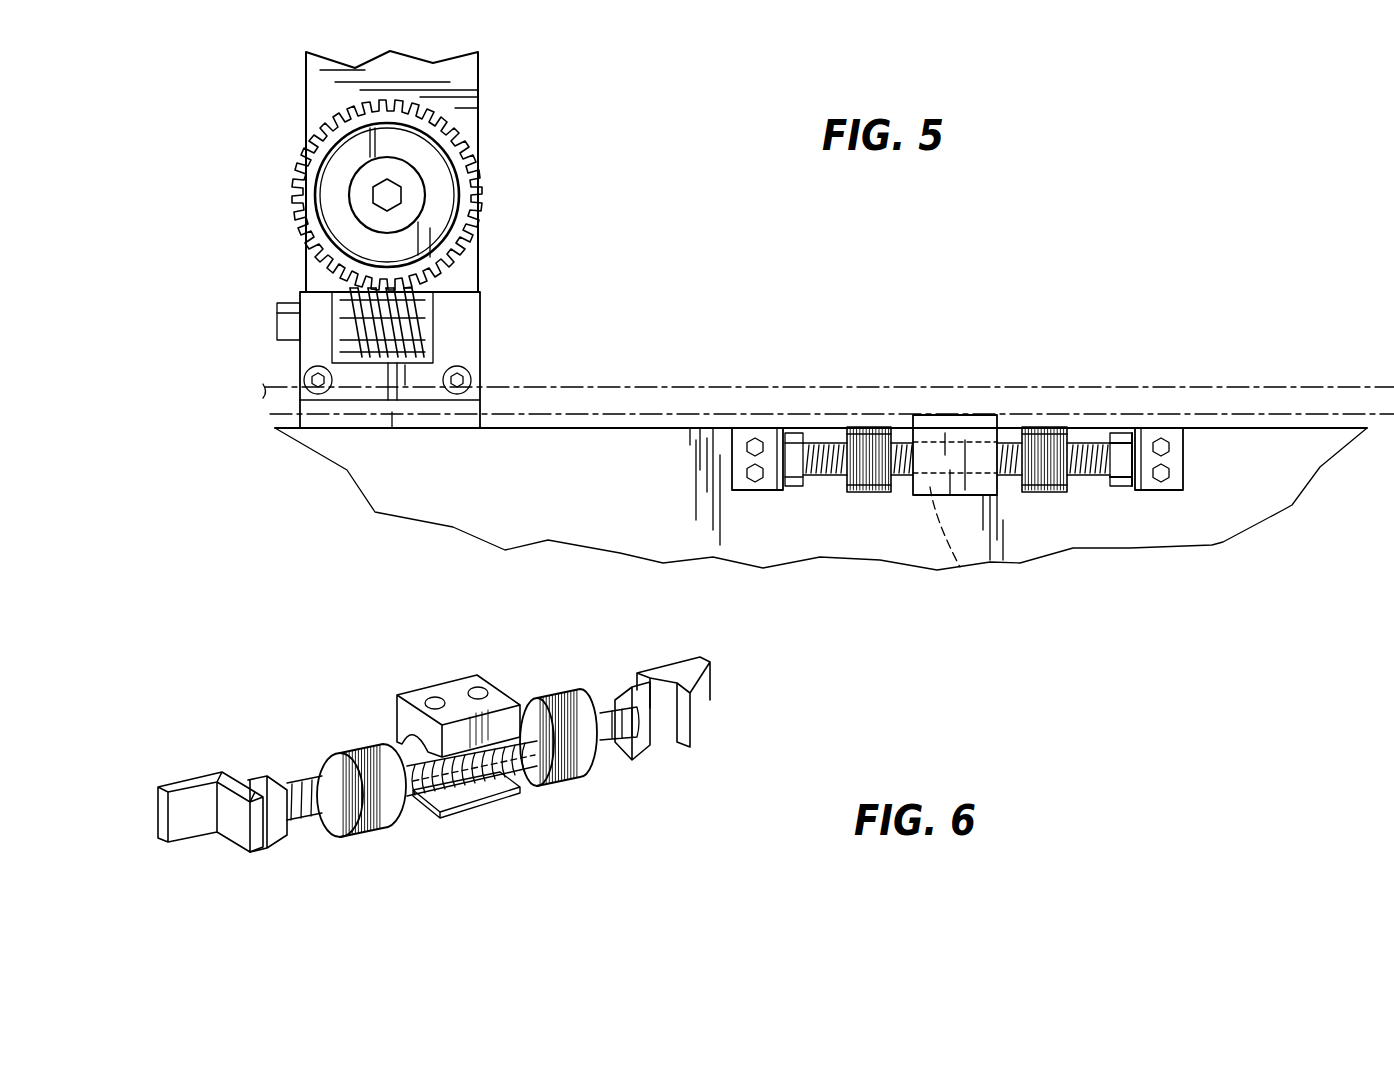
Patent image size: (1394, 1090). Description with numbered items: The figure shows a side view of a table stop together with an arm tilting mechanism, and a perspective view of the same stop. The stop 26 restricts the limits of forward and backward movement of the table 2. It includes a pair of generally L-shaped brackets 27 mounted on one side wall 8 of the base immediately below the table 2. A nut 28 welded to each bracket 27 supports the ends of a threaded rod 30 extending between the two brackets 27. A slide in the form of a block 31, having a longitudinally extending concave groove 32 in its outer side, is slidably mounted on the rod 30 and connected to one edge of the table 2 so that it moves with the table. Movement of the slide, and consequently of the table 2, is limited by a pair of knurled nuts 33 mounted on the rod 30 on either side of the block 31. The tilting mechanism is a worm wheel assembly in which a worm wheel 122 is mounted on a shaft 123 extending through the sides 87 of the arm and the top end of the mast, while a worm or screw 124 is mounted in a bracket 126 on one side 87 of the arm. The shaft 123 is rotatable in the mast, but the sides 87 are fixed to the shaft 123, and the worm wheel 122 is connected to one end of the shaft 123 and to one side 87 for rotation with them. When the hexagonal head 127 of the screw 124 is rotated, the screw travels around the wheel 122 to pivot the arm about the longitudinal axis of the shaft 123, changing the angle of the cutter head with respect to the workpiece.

In FIG. 5, the table 2 is at (1275, 384).
In FIG. 5, the side wall 8 is at (572, 480).
In FIG. 5, the stop 26 is at (942, 368).
In FIG. 6, the stop 26 is at (650, 813).
In FIG. 5, the L-shaped brackets 27 is at (738, 438).
In FIG. 6, the L-shaped brackets 27 is at (192, 800).
In FIG. 5, the nut 28 is at (795, 485).
In FIG. 6, the nut 28 is at (265, 783).
In FIG. 5, the threaded rod 30 is at (828, 438).
In FIG. 6, the threaded rod 30 is at (311, 783).
In FIG. 5, the block 31 is at (977, 427).
In FIG. 6, the block 31 is at (447, 691).
In FIG. 5, the concave groove 32 is at (960, 567).
In FIG. 6, the concave groove 32 is at (502, 797).
In FIG. 5, the knurled nuts 33 is at (873, 485).
In FIG. 6, the knurled nuts 33 is at (383, 827).
In FIG. 5, the sides of the arm 87 is at (318, 88).
In FIG. 5, the worm wheel 122 is at (462, 128).
In FIG. 5, the shaft 123 is at (412, 197).
In FIG. 5, the worm or screw 124 is at (425, 320).
In FIG. 5, the bracket 126 is at (472, 340).
In FIG. 5, the hexagonal head 127 is at (282, 310).